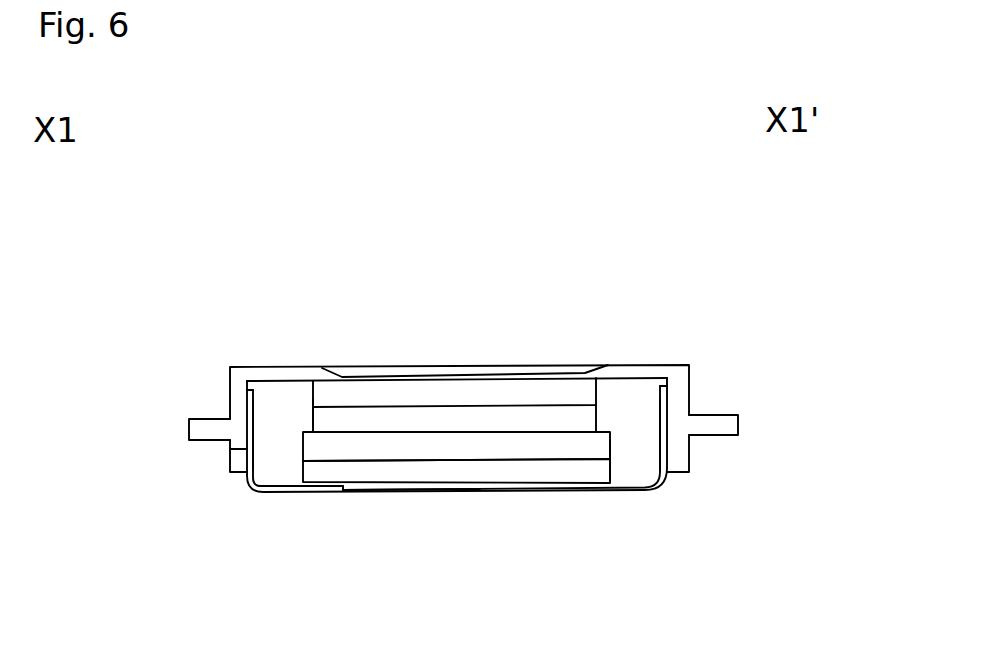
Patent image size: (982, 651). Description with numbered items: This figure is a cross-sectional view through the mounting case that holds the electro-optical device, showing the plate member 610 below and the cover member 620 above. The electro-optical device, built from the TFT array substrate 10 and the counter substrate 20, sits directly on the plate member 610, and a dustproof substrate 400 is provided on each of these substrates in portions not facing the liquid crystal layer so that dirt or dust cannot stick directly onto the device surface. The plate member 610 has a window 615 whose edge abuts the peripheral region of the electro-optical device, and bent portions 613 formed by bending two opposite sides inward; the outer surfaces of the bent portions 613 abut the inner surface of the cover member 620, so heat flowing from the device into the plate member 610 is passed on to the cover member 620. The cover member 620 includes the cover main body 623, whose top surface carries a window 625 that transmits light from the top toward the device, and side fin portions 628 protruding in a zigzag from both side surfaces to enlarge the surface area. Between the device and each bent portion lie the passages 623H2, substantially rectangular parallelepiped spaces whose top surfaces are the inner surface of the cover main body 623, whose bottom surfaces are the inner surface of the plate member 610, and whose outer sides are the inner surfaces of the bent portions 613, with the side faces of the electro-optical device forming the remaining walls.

The cover member 620 is at (593, 248).
The window 625 is at (491, 334).
The cover main body 623 is at (608, 364).
The passages 623H2 is at (279, 431).
The side fin portions 628 is at (200, 442).
The bent portions 613 is at (247, 449).
The plate member 610 is at (303, 552).
The window 615 is at (440, 524).
The dustproof substrate 400 is at (428, 392).
The counter substrate 20 is at (381, 417).
The TFT array substrate 10 is at (575, 443).